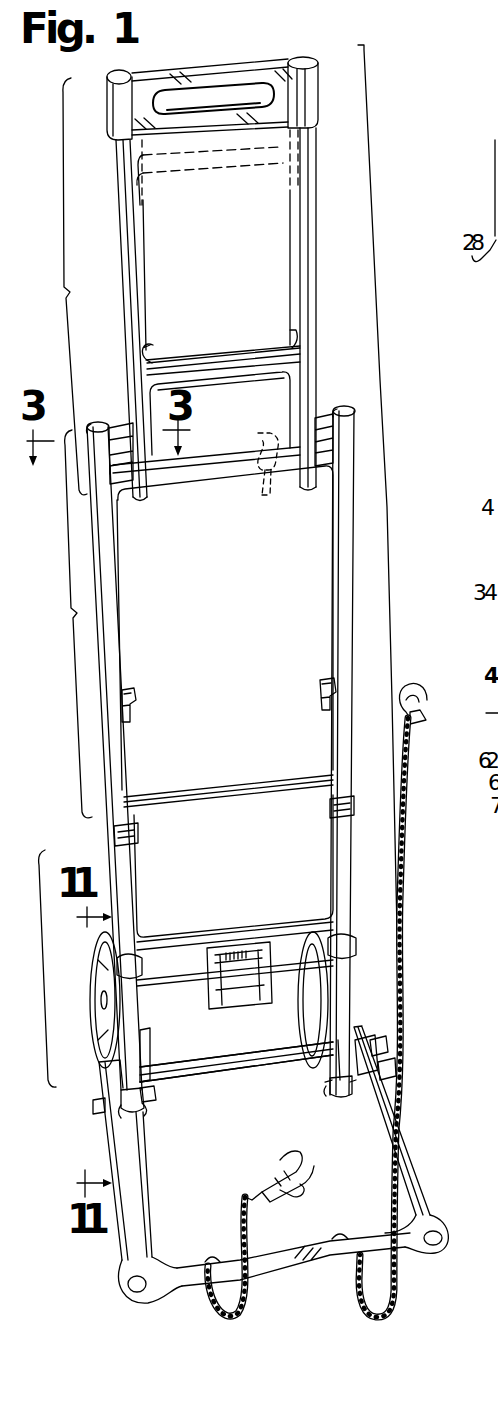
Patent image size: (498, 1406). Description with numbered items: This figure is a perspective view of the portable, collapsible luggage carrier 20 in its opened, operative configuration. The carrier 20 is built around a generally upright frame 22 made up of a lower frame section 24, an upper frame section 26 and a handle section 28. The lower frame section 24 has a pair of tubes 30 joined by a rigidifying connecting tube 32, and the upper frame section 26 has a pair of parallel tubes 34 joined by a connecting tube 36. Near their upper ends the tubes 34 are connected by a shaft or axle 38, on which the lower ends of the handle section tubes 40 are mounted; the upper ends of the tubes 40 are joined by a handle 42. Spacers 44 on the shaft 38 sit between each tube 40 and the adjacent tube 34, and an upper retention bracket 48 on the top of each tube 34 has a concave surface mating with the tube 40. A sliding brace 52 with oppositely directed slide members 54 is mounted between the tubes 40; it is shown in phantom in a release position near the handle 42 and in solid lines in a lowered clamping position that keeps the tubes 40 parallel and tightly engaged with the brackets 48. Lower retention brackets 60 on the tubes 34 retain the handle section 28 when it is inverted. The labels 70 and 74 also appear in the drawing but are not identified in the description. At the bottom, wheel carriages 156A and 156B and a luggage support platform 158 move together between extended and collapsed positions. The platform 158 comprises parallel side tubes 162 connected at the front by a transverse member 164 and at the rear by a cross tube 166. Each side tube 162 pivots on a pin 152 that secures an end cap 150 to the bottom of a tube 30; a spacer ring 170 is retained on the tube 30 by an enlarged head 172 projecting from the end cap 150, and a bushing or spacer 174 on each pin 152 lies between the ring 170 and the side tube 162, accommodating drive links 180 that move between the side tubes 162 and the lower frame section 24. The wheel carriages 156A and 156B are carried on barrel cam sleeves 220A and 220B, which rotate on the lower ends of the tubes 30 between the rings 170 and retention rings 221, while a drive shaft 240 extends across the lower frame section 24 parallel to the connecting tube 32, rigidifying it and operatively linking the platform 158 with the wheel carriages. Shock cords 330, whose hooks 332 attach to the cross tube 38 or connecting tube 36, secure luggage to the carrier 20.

The carrier 20 is at (327, 77).
The frame 22 is at (387, 507).
The lower frame section 24 is at (44, 962).
The upper frame section 26 is at (73, 613).
The handle section 28 is at (66, 292).
The lower frame section tubes 30 is at (134, 894).
The rigidifying connecting tube 32 is at (200, 930).
The upper frame section tubes 34 is at (123, 617).
The connecting tube 36 is at (237, 788).
The shaft or axle 38 is at (217, 464).
The handle section tubes 40 is at (133, 293).
The handle 42 is at (173, 75).
The spacers 44 is at (127, 500).
The upper retention bracket 48 is at (111, 424).
The sliding brace 52 is at (244, 170).
The slide members 54 is at (153, 350).
The lower retention brackets 60 is at (133, 690).
The clamps 70 is at (132, 828).
The clamp fasteners 74 is at (128, 845).
The end cap 150 is at (251, 1169).
The pins 152 is at (94, 1106).
The wheel carriage 156A is at (85, 994).
The wheel carriage 156B is at (296, 992).
The luggage support platform 158 is at (112, 1252).
The platform side tubes 162 is at (106, 1140).
The transversely disposed member 164 is at (290, 1266).
The cross tube 166 is at (223, 1072).
The spacer ring 170 is at (150, 1108).
The enlarged head 172 is at (138, 1120).
The bushing or spacer member 174 is at (150, 1100).
The drive links 180 is at (138, 1046).
The barrel cam sleeve 220A is at (162, 1068).
The barrel cam sleeve 220B is at (352, 1073).
The retention ring 221 is at (147, 965).
The drive shaft 240 is at (155, 992).
The shock cords 330 is at (258, 500).
The hook 332 is at (241, 420).